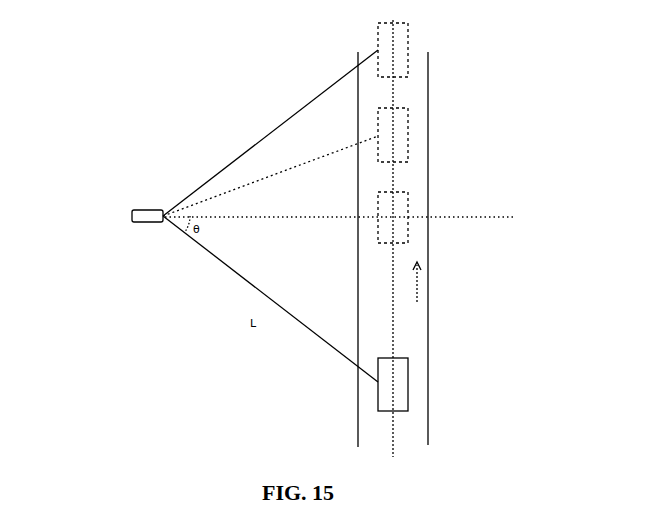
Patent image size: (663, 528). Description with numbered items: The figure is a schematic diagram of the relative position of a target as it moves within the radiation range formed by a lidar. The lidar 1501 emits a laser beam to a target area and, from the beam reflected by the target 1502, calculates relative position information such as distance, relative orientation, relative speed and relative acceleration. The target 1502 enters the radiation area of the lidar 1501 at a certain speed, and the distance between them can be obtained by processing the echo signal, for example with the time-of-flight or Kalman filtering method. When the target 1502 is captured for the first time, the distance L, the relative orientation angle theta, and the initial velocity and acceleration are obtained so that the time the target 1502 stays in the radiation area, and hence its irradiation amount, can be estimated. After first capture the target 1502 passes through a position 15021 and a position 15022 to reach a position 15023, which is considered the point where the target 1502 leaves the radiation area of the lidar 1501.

The lidar 1501 is at (123, 203).
The target 1502 is at (417, 397).
The position 15021 is at (423, 212).
The position 15022 is at (419, 138).
The position 15023 is at (418, 50).